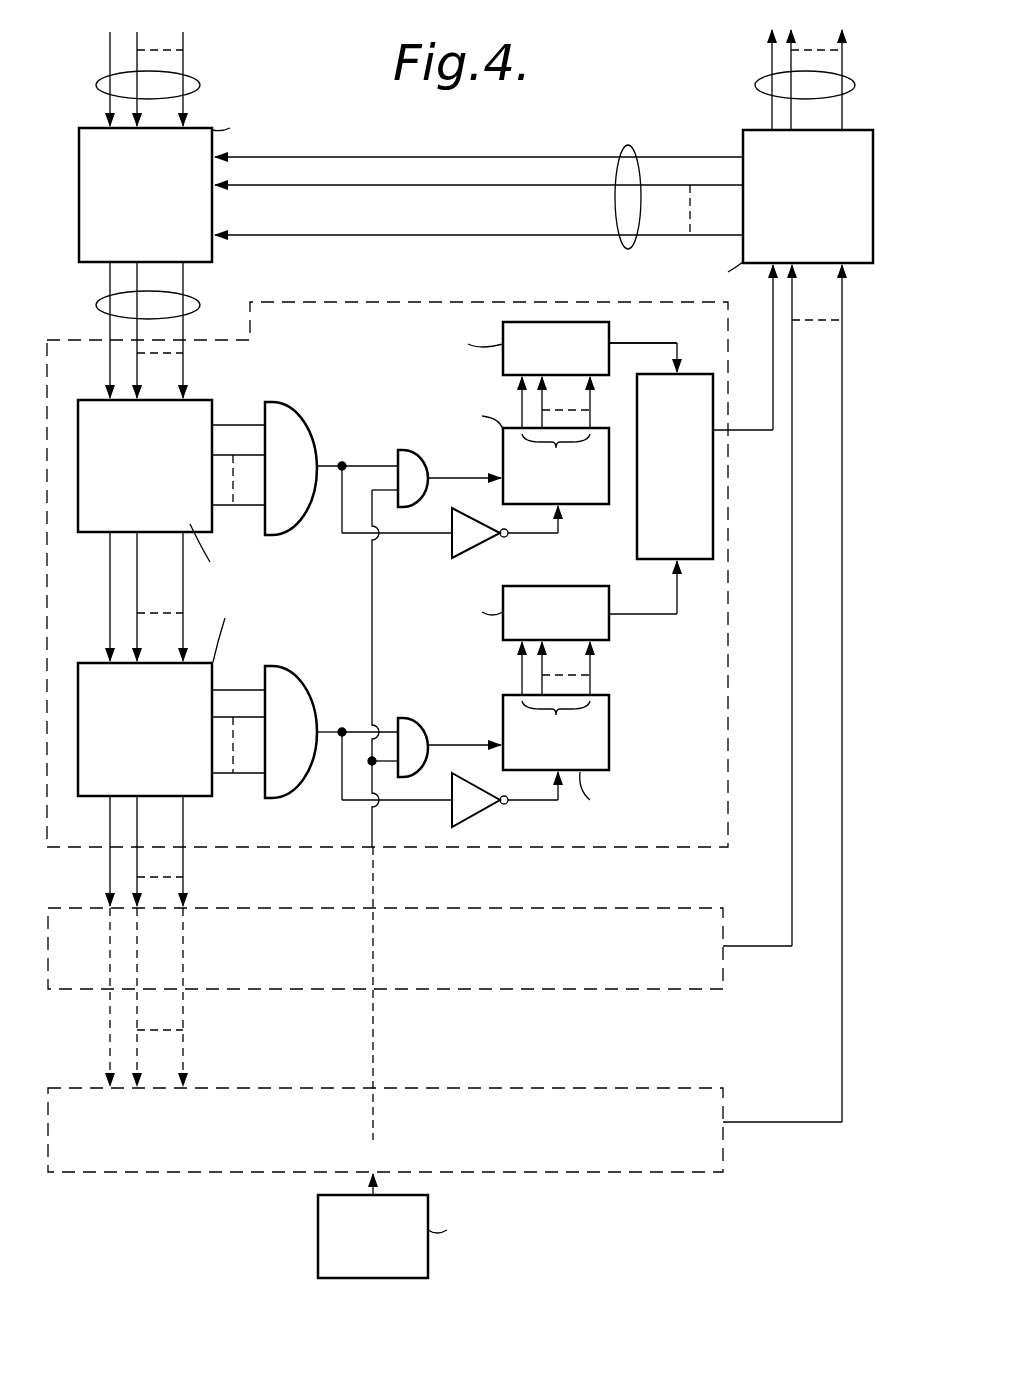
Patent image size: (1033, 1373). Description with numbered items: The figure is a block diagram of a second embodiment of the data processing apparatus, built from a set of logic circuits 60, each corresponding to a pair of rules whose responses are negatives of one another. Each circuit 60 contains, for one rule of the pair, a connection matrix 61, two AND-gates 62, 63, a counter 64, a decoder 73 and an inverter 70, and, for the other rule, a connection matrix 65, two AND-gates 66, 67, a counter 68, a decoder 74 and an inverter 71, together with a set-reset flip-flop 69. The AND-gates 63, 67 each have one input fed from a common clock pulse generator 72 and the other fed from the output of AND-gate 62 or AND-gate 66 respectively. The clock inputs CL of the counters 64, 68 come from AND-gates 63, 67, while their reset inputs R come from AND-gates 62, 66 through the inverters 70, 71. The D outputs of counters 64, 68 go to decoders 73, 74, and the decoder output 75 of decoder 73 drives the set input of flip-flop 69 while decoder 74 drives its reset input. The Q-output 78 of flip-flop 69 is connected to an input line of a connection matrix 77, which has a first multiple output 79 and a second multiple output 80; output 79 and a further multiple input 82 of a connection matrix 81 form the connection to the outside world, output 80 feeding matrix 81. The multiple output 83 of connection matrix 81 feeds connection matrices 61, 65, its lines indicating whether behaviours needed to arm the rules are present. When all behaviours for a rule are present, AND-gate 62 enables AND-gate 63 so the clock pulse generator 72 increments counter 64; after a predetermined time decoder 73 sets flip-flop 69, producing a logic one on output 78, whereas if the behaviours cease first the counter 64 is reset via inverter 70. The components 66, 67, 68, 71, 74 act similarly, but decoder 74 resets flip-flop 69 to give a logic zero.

The logic circuit 60 is at (53, 330).
The connection matrix 61 is at (200, 530).
The AND-gate 62 is at (298, 425).
The AND-gate 63 is at (408, 450).
The counter 64 is at (507, 450).
The connection matrix 65 is at (171, 852).
The AND-gate 66 is at (290, 682).
The AND-gate 67 is at (415, 730).
The counter 68 is at (600, 740).
The set-reset flip-flop 69 is at (690, 385).
The inverter 70 is at (458, 542).
The inverter 71 is at (475, 805).
The clock pulse generator 72 is at (448, 884).
The decoder 73 is at (543, 348).
The decoder 74 is at (551, 600).
The decoder output 75 is at (612, 342).
The connection matrix 77 is at (709, 207).
The Q-output 78 is at (728, 432).
The first multiple output 79 is at (756, 86).
The second multiple output 80 is at (625, 145).
The connection matrix 81 is at (213, 182).
The multiple input 82 is at (200, 82).
The multiple output 83 is at (200, 305).